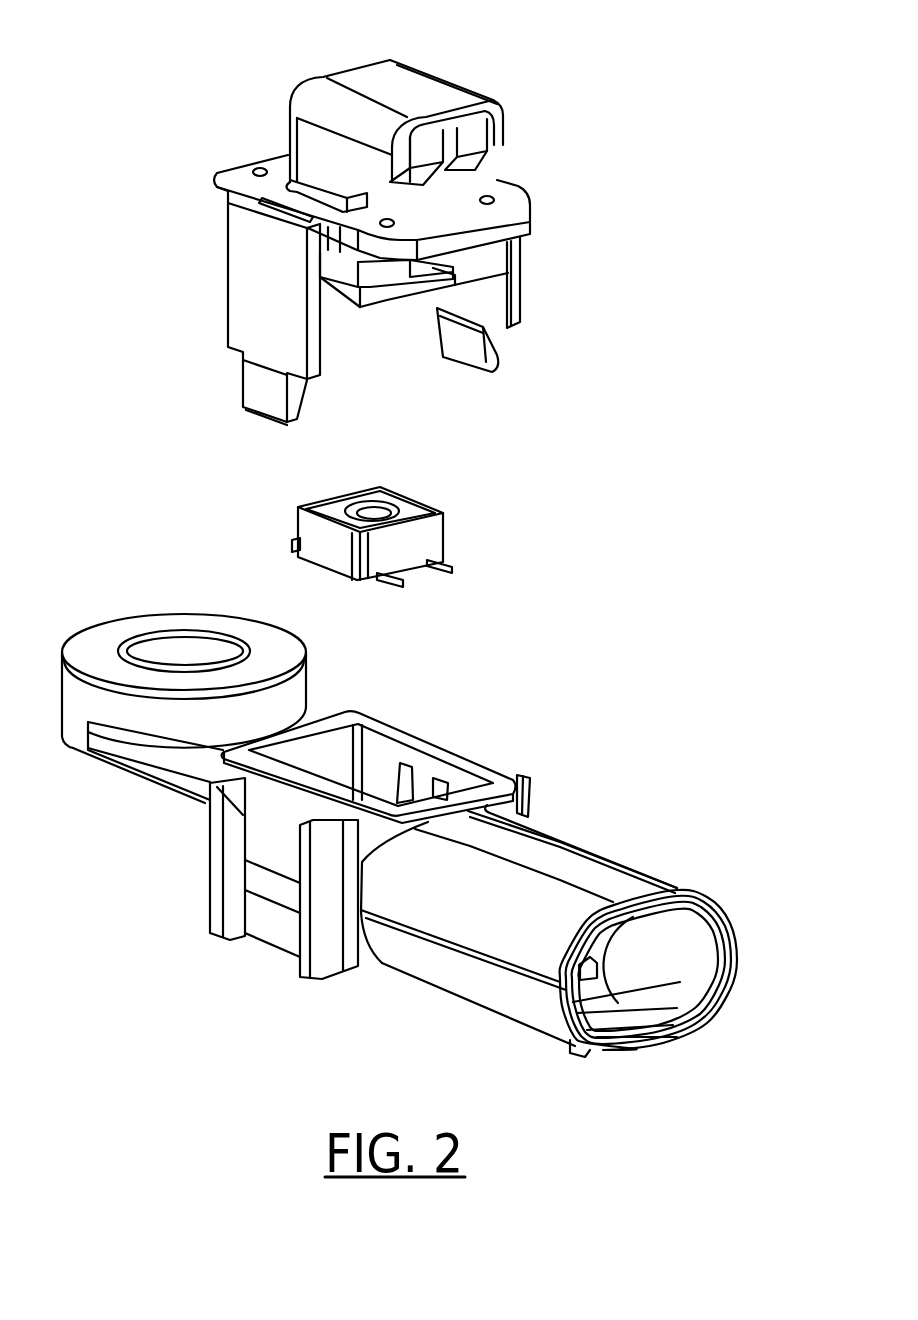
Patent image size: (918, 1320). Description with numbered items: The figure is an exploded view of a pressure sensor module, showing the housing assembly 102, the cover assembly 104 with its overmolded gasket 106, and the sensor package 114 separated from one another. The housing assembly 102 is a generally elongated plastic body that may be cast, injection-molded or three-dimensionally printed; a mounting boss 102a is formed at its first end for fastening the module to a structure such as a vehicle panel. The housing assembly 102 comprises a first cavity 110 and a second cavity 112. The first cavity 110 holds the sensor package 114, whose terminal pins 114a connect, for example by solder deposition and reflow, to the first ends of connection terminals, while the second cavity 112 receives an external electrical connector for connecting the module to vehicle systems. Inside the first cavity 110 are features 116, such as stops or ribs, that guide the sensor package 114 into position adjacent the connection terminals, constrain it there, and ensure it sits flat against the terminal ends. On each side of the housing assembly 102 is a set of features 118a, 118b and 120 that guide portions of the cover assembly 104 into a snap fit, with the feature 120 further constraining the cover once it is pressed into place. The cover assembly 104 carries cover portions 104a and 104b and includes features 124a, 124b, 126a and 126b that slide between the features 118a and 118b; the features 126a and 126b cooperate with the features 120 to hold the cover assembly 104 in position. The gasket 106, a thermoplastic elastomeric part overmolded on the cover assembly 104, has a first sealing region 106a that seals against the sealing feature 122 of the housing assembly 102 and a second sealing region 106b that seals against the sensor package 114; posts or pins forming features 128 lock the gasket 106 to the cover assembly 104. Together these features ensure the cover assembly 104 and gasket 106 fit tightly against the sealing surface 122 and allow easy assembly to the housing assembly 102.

The housing assembly 102 is at (453, 992).
The mounting boss 102a is at (121, 622).
The cover assembly 104 is at (530, 208).
The cover 104a is at (466, 55).
The cover flange 104b is at (355, 193).
The gasket 106 is at (531, 242).
The first sealing region 106a is at (388, 302).
The second sealing region 106b is at (336, 302).
The first cavity 110 is at (367, 756).
The second cavity 112 is at (648, 957).
The sensor package 114 is at (450, 527).
The terminal pins 114a is at (450, 570).
The features 116 is at (405, 768).
The feature 118a is at (233, 920).
The feature 118b is at (297, 961).
The feature 120 is at (262, 880).
The sealing feature 122 is at (512, 778).
The feature 124a is at (228, 290).
The feature 124b is at (526, 298).
The feature 126a is at (239, 388).
The feature 126b is at (503, 360).
The features 128 is at (262, 167).